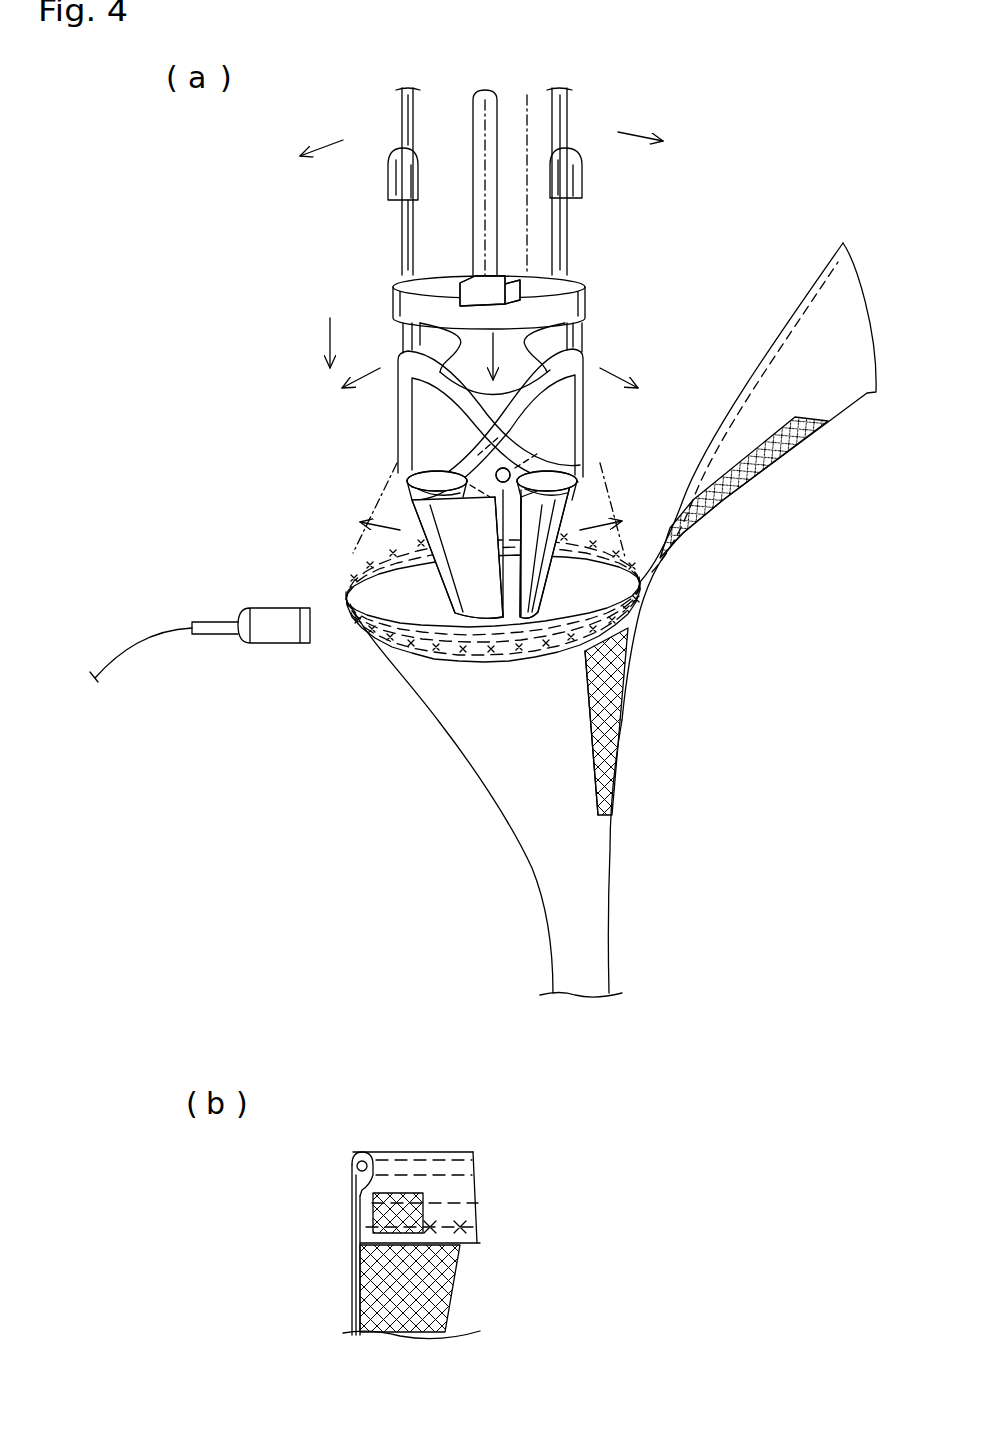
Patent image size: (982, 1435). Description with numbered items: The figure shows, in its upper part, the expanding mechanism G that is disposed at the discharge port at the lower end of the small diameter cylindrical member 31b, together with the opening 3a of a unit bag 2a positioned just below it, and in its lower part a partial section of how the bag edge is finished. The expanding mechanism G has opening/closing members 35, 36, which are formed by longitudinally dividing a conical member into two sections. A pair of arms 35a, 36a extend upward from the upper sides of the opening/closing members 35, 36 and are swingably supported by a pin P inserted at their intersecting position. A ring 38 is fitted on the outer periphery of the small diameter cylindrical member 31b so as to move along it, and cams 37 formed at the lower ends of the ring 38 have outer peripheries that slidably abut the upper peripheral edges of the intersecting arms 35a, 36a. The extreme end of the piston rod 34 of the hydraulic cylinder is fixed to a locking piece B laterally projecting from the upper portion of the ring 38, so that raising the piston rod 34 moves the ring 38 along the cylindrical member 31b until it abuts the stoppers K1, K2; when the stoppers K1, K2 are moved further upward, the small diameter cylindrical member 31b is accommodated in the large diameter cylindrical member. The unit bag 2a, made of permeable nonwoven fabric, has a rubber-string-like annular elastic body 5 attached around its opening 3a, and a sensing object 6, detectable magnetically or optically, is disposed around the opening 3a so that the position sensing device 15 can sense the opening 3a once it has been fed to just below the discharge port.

The small diameter cylindrical member 31b is at (405, 130).
The piston rod 34 is at (490, 150).
The stopper K1 is at (393, 177).
The stopper K2 is at (578, 177).
The ring 38 is at (410, 310).
The locking piece B is at (510, 290).
The cam 37 is at (575, 330).
The expanding mechanism G is at (652, 340).
The flap arm 36a is at (437, 397).
The arm 35a is at (575, 392).
The pin P is at (512, 470).
The opening/closing member 35 is at (447, 523).
The opening/closing member 36 is at (545, 525).
The position sensing device 15 is at (282, 620).
The opening 3a is at (417, 615).
The unit bag 2a is at (587, 873).
The annular elastic body 5 is at (352, 1167).
The sensing object 6 is at (345, 1195).